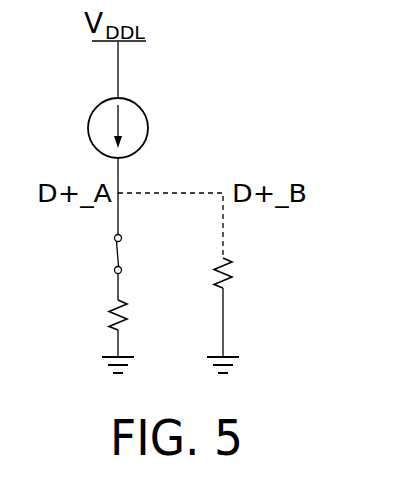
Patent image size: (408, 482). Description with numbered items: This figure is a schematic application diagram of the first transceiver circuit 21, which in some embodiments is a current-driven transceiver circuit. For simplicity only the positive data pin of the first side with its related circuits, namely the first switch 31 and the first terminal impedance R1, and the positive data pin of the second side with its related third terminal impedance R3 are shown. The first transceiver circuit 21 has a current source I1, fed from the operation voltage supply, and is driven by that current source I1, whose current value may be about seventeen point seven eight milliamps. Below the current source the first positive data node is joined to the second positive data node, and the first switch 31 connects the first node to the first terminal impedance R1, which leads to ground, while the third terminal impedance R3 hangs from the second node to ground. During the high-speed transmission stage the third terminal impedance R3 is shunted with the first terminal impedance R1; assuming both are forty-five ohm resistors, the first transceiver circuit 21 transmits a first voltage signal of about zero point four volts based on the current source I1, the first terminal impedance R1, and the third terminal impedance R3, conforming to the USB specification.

The first transceiver circuit 21 is at (171, 128).
The first switch 31 is at (114, 262).
The current source I1 is at (148, 127).
The first terminal impedance R1 is at (100, 315).
The third terminal impedance R3 is at (240, 273).